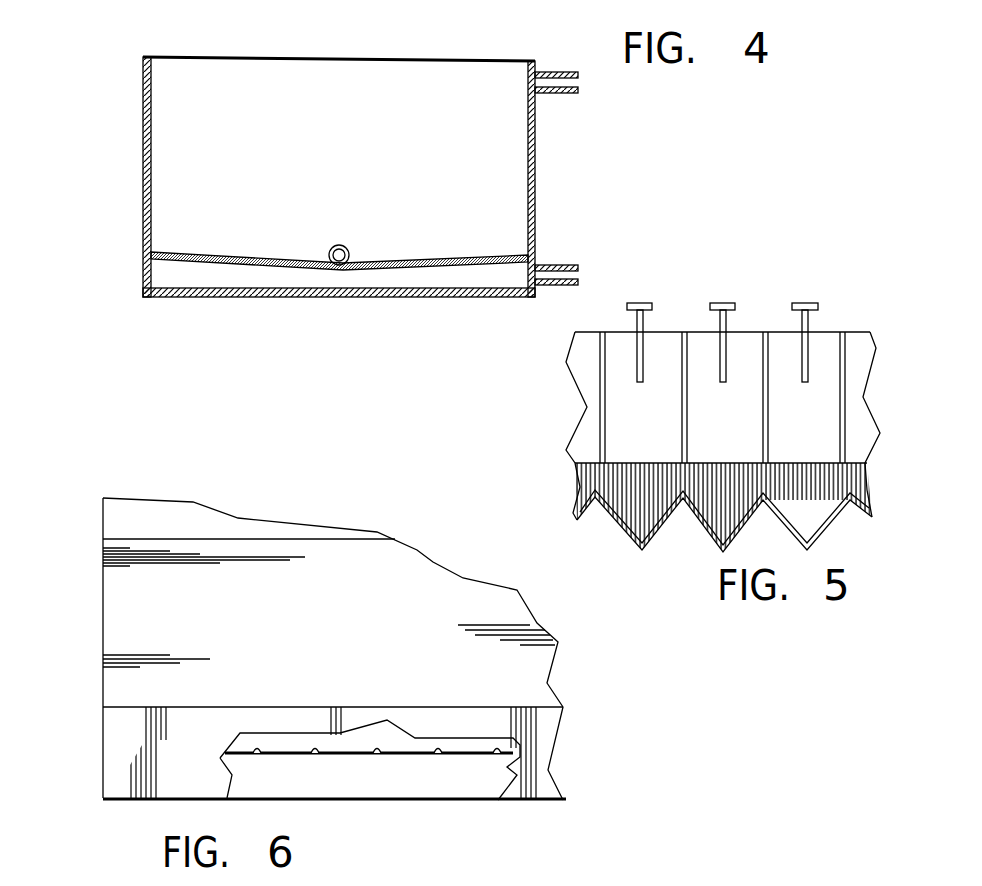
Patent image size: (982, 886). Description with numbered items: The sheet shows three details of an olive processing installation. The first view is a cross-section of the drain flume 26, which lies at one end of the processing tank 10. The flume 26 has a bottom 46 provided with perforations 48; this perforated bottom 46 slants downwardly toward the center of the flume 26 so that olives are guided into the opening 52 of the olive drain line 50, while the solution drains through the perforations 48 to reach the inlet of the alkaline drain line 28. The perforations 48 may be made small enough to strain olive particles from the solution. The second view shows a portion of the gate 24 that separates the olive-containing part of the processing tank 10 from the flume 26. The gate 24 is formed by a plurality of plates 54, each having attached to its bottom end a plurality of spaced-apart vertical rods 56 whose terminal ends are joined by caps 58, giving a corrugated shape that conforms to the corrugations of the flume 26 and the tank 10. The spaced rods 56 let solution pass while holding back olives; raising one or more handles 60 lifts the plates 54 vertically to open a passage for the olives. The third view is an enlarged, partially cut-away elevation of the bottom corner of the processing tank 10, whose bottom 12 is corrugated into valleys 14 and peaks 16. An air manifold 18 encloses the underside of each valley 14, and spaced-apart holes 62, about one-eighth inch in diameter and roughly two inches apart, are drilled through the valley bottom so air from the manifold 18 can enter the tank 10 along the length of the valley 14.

In FIG. 6, the processing tank 10 is at (96, 636).
In FIG. 6, the bottom 12 is at (503, 812).
In FIG. 6, the valley 14 is at (417, 757).
In FIG. 6, the peak 16 is at (115, 548).
In FIG. 6, the air manifold 18 is at (103, 741).
In FIG. 5, the gate 24 is at (764, 316).
In FIG. 4, the drain flume 26 is at (497, 184).
In FIG. 4, the alkaline drain line 28 is at (560, 267).
In FIG. 4, the bottom 46 is at (415, 270).
In FIG. 4, the perforations 48 is at (230, 258).
In FIG. 4, the olive drain line 50 is at (339, 245).
In FIG. 4, the opening 52 is at (350, 253).
In FIG. 5, the plate 54 is at (827, 343).
In FIG. 5, the vertical rod 56 is at (717, 507).
In FIG. 5, the cap 58 is at (727, 527).
In FIG. 5, the handle 60 is at (713, 303).
In FIG. 6, the hole 62 is at (257, 756).